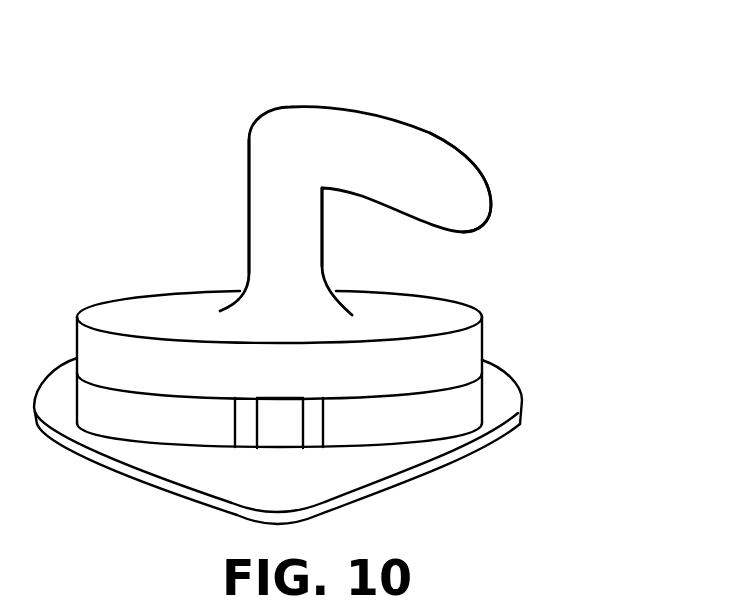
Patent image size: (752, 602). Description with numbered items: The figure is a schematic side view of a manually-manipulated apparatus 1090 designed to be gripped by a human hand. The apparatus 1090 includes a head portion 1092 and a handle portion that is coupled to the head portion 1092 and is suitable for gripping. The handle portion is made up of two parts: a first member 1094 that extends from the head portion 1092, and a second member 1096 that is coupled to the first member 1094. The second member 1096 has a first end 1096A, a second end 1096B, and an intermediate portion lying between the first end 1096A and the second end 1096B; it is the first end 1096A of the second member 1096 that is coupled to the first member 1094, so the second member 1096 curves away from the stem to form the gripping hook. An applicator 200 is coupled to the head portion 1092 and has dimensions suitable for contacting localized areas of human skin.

The applicator 200 is at (505, 397).
The apparatus 1090 is at (343, 275).
The head portion 1092 is at (458, 301).
The first member 1094 is at (322, 260).
The second member 1096 is at (388, 171).
The first end 1096A is at (257, 113).
The second end 1096B is at (485, 181).